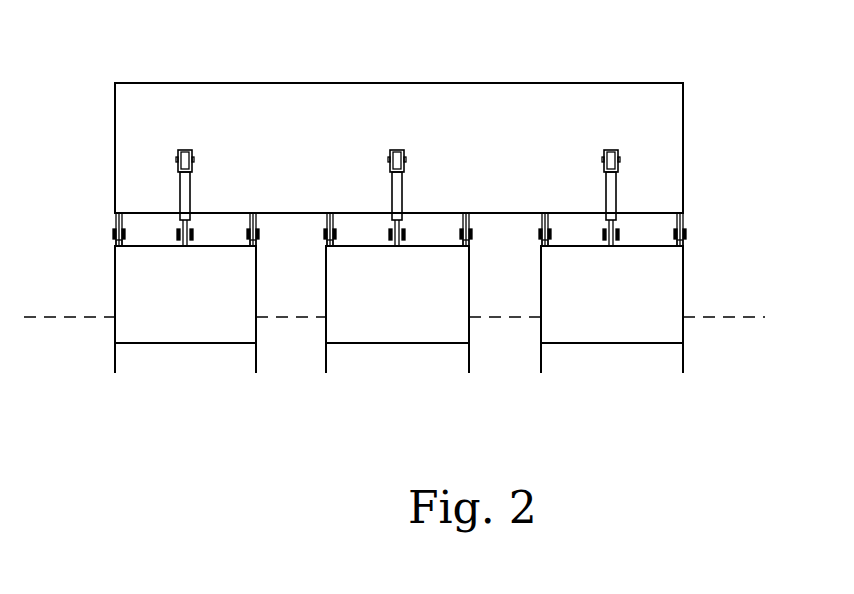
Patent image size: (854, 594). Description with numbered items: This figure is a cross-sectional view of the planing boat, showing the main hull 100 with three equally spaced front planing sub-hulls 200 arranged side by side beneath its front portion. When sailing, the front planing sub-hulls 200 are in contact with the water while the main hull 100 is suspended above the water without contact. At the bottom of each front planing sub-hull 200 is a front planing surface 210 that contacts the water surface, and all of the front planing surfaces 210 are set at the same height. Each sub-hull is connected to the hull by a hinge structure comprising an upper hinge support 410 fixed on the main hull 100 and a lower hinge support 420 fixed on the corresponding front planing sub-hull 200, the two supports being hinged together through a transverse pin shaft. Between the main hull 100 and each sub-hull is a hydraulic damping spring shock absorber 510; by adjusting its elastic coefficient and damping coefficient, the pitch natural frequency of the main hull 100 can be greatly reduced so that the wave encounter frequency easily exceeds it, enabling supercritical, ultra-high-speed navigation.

The main hull 100 is at (337, 125).
The front planing sub-hull 200 is at (137, 298).
The front planing surface 210 is at (158, 343).
The upper hinge support 410 is at (115, 218).
The lower hinge support 420 is at (115, 247).
The hydraulic damping spring shock absorber 510 is at (185, 185).